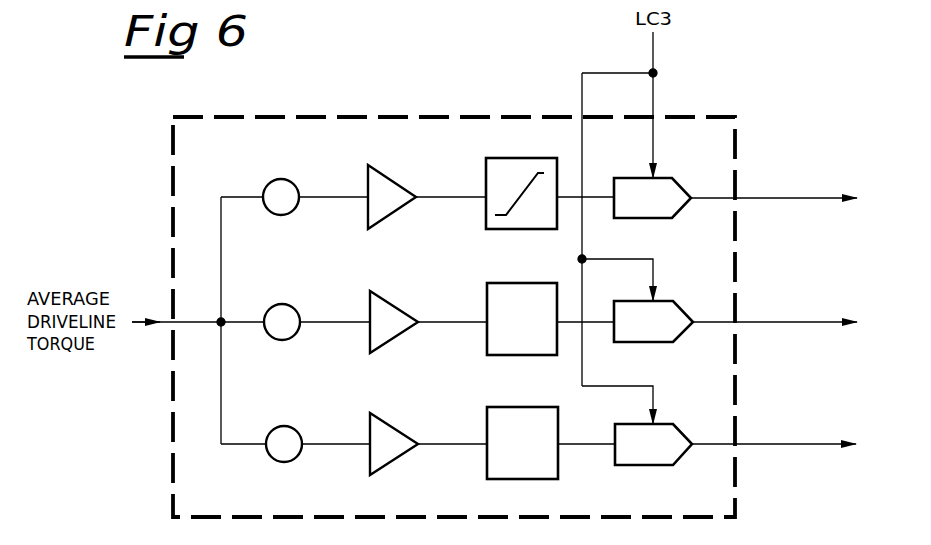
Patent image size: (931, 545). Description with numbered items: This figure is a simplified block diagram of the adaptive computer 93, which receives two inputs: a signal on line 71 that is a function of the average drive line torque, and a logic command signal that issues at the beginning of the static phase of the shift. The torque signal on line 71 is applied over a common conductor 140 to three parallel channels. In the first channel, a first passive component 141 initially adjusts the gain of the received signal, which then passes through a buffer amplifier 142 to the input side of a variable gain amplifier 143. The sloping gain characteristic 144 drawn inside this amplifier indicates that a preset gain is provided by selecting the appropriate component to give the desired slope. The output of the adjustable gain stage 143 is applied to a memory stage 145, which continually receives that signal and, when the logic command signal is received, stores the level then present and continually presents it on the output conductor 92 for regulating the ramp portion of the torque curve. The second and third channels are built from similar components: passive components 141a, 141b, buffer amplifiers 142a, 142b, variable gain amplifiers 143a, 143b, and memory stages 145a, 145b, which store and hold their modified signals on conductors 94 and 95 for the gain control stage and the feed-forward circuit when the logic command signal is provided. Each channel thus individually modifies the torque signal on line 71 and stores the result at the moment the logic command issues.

The adaptive computer 93 is at (478, 107).
The line 71 is at (167, 320).
The common conductor 140 is at (222, 248).
The first passive component 141 is at (315, 183).
The first passive component 141a is at (295, 308).
The first passive component 141b is at (318, 430).
The buffer amplifier 142 is at (427, 190).
The buffer amplifier 142a is at (428, 314).
The buffer amplifier 142b is at (428, 438).
The variable gain amplifier 143 is at (550, 180).
The variable gain amplifier 143a is at (550, 307).
The variable gain amplifier 143b is at (551, 430).
The sloping gain characteristic 144 is at (523, 186).
The memory stage 145 is at (652, 138).
The memory stage 145a is at (637, 313).
The memory stage 145b is at (637, 440).
The output conductor 92 is at (787, 197).
The conductor 94 is at (789, 322).
The conductor 95 is at (789, 444).